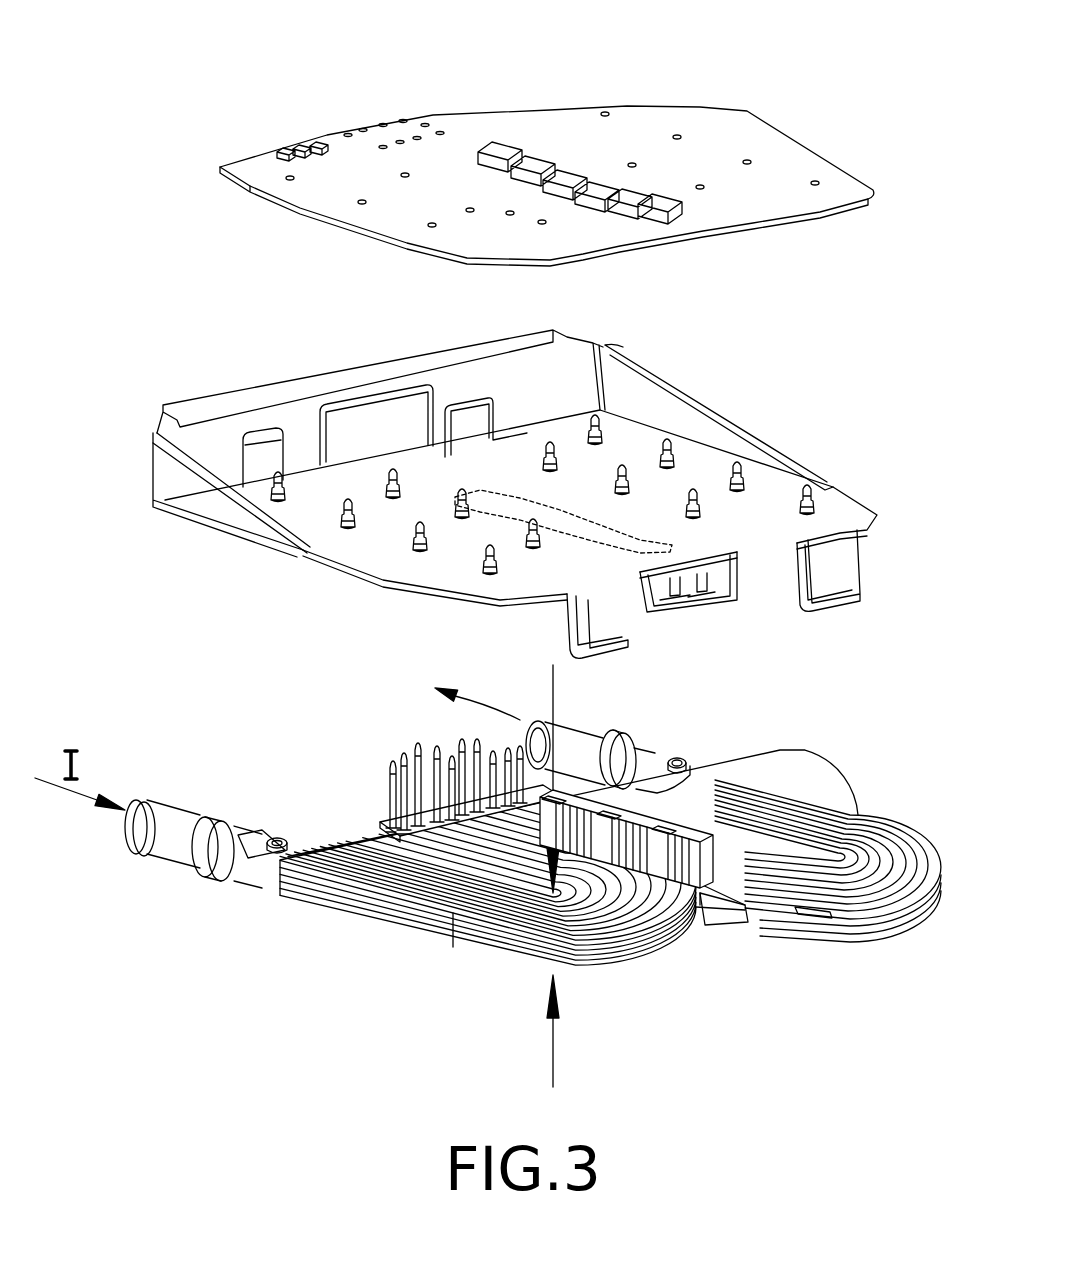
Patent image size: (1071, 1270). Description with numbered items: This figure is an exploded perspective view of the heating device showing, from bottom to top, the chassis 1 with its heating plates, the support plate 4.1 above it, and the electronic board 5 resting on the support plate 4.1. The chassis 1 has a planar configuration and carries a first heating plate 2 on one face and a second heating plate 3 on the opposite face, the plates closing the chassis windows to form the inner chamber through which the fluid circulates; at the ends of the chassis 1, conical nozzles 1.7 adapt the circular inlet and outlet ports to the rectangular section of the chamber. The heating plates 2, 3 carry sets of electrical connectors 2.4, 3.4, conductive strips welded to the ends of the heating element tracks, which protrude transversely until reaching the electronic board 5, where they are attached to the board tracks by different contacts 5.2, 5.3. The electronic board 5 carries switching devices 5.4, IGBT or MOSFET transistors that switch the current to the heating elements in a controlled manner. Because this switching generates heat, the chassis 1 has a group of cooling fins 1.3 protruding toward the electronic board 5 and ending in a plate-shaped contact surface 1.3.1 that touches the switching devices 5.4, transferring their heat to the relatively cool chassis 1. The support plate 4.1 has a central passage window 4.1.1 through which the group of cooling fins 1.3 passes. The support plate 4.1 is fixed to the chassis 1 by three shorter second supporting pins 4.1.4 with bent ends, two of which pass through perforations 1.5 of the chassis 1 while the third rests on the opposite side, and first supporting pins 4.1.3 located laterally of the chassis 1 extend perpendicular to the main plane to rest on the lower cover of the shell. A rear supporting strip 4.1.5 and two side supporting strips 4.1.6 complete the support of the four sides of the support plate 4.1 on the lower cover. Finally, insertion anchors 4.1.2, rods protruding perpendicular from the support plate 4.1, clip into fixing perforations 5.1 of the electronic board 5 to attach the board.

The chassis 1 is at (414, 960).
The group of cooling fins 1.3 is at (720, 867).
The contact surface 1.3.1 is at (703, 847).
The perforations 1.5 is at (700, 928).
The conical nozzles 1.7 is at (267, 835).
The first heating plate 2 is at (311, 910).
The electrical connectors 2.4 is at (468, 745).
The second heating plate 3 is at (373, 837).
The electrical connectors 3.4 is at (420, 800).
The support plate 4.1 is at (837, 510).
The central passage window 4.1.1 is at (547, 513).
The insertion anchors 4.1.2 is at (703, 503).
The first supporting pins 4.1.3 is at (587, 630).
The second supporting pins 4.1.4 is at (713, 587).
The rear supporting strip 4.1.5 is at (290, 385).
The side supporting strips 4.1.6 is at (650, 358).
The electronic board 5 is at (828, 165).
The fixing perforations 5.1 is at (636, 164).
The contacts 5.2 is at (403, 121).
The contacts 5.3 is at (440, 133).
The switching devices 5.4 is at (583, 137).